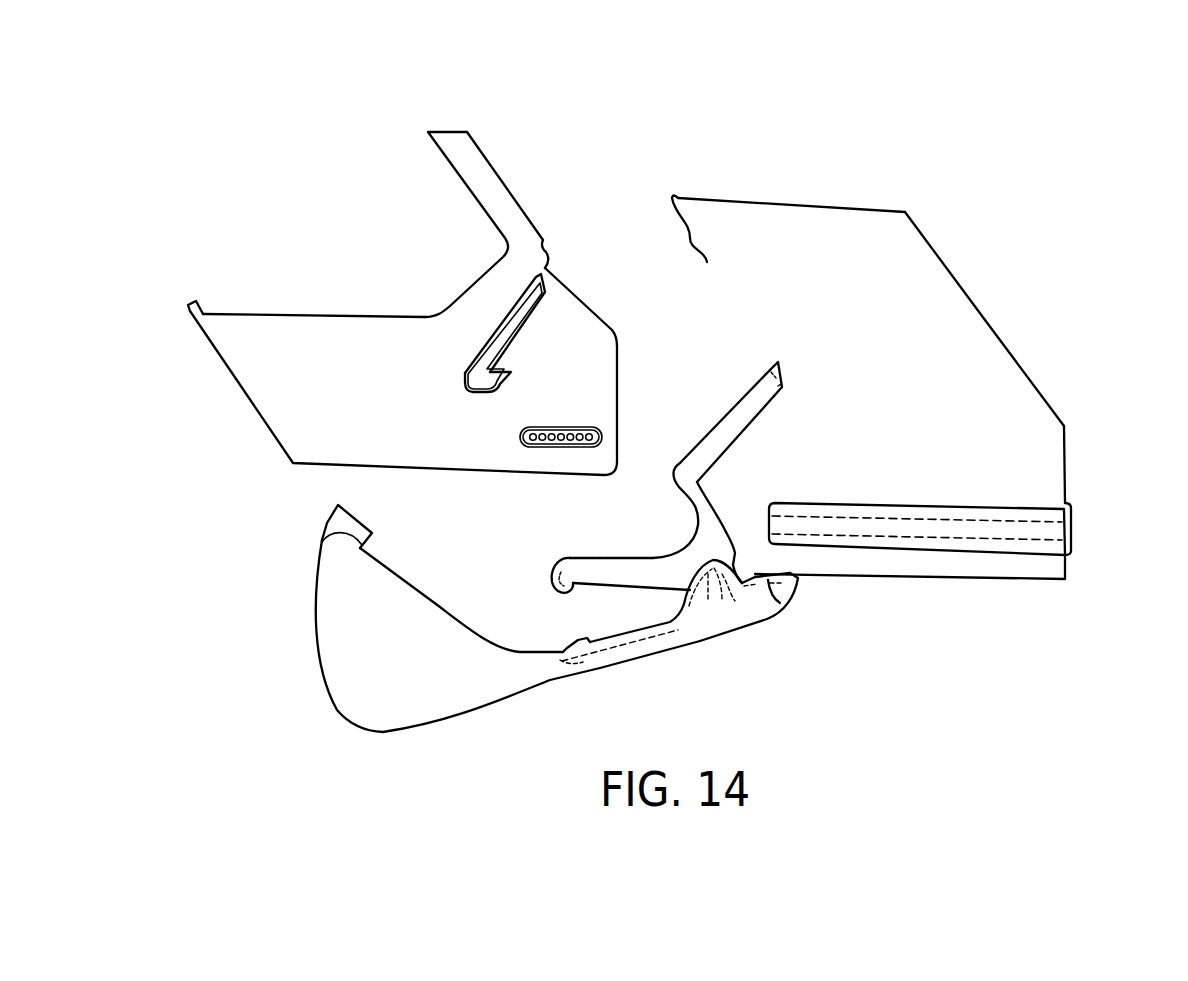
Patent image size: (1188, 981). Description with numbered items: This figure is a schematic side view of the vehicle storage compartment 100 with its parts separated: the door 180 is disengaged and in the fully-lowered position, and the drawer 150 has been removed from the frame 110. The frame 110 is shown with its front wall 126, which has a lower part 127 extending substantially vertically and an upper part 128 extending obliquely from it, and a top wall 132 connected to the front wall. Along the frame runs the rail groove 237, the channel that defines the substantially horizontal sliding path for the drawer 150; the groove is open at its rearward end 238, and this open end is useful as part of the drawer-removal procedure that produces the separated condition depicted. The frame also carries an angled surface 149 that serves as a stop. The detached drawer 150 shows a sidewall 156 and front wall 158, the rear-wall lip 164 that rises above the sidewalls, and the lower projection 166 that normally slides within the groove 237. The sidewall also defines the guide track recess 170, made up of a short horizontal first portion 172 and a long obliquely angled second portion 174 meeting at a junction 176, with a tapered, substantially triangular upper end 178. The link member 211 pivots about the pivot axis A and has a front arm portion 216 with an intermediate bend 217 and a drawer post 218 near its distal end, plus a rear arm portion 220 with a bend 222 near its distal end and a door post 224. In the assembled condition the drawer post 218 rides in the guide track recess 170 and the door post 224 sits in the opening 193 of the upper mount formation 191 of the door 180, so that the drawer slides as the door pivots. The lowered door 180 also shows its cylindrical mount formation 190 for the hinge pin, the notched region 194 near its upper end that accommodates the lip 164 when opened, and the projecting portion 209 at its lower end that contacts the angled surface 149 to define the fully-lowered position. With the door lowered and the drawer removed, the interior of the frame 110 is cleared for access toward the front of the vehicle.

The storage compartment 100 is at (293, 106).
The frame 110 is at (837, 207).
The front wall 126 is at (955, 273).
The lower part 127 is at (1069, 455).
The upper part 128 is at (1017, 357).
The top wall 132 is at (717, 201).
The angled surface 149 is at (772, 575).
The drawer 150 is at (449, 133).
The sidewalls 156 is at (283, 327).
The front wall 158 is at (490, 158).
The lip 164 is at (190, 303).
The lower projections 166 is at (560, 430).
The guide track recess 170 is at (517, 321).
The first portion 172 is at (493, 386).
The second portion 174 is at (495, 346).
The junction 176 is at (468, 378).
The upper end 178 is at (545, 243).
The door 180 is at (378, 735).
The mount formations 190 is at (692, 603).
The mount formations 191 is at (563, 647).
The opening 193 is at (590, 657).
The notched region 194 is at (322, 540).
The projecting portion 209 is at (780, 603).
The link member 211 is at (608, 565).
The front arm portion 216 is at (722, 430).
The bend 217 is at (703, 483).
The drawer post 218 is at (773, 367).
The rear arm portion 220 is at (653, 567).
The bend 222 is at (568, 558).
The door post 224 is at (552, 577).
The groove 237 is at (1064, 532).
The rearward end 238 is at (765, 519).
The pivot axis A is at (713, 597).